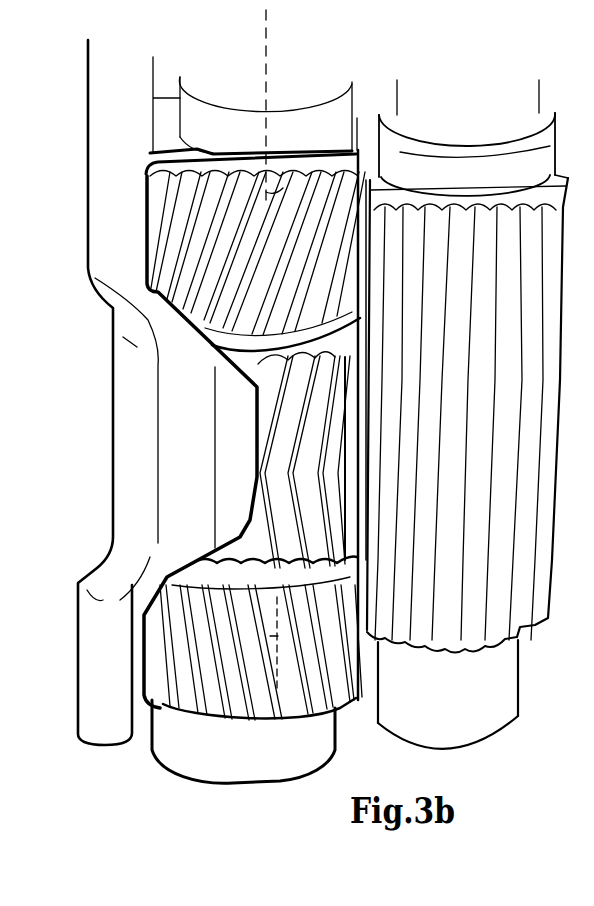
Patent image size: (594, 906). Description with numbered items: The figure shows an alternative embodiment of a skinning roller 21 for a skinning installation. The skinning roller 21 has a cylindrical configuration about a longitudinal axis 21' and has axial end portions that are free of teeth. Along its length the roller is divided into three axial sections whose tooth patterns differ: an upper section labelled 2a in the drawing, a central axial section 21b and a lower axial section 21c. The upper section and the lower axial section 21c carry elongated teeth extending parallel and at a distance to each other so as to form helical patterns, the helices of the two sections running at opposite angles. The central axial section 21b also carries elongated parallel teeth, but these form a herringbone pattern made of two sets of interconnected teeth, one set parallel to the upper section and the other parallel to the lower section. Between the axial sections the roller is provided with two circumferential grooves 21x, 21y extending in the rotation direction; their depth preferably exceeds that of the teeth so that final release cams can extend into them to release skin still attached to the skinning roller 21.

The skinning roller 21 is at (246, 445).
The longitudinal axis 21' is at (304, 105).
The upper helical gear portion 2a is at (190, 236).
The circumferential groove 21y is at (193, 327).
The central axial section 21b is at (285, 430).
The circumferential groove 21x is at (207, 557).
The lower axial section 21c is at (220, 615).